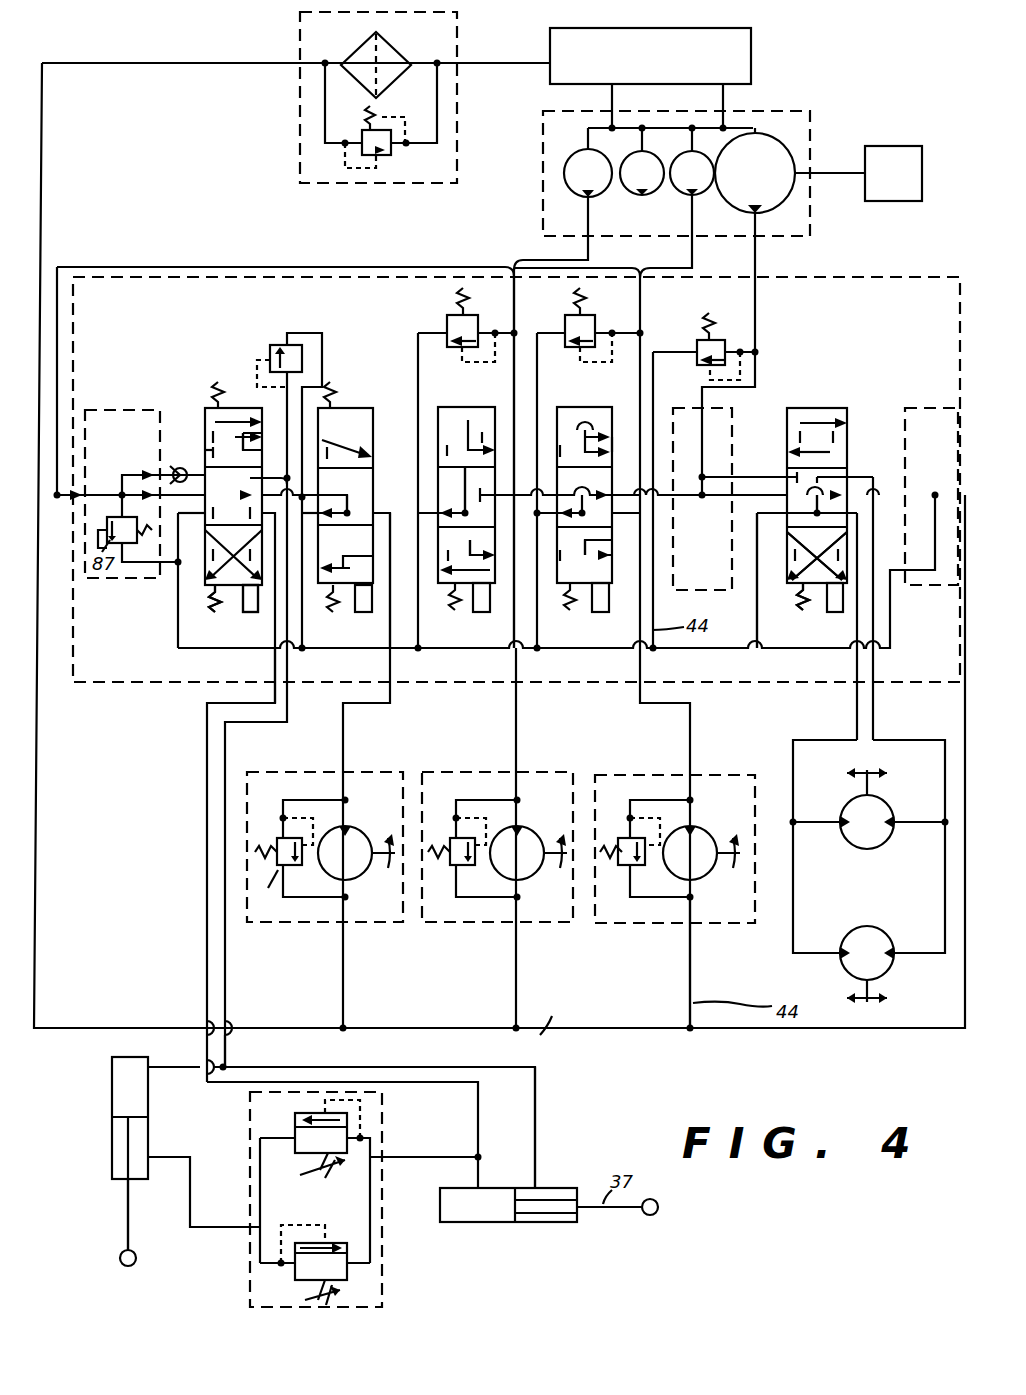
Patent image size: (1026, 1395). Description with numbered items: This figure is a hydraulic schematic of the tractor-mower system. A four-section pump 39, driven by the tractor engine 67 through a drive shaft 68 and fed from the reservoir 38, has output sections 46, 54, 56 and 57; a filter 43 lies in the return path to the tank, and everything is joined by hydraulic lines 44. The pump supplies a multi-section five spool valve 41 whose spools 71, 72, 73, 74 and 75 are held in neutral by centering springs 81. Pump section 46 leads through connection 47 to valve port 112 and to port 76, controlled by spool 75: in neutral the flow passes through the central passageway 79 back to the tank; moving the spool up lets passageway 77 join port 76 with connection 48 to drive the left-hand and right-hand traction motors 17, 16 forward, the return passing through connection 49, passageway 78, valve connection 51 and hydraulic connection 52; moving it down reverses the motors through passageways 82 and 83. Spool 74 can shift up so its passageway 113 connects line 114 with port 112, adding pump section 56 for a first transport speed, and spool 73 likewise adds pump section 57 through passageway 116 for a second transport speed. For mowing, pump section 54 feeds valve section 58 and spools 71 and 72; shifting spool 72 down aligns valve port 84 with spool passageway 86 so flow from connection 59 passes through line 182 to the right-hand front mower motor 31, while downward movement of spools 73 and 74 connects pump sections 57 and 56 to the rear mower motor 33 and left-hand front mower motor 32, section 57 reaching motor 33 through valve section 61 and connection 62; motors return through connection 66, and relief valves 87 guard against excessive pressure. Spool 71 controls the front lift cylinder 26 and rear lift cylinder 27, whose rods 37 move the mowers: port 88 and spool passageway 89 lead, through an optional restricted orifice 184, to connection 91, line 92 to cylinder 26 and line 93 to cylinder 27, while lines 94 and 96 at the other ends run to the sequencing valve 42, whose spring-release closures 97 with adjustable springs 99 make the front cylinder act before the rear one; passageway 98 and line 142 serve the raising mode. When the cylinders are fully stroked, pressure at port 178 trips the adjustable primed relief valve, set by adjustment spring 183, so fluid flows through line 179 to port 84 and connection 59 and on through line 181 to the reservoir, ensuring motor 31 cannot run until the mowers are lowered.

The filter 43 is at (452, 22).
The hydraulic reservoir 38 is at (751, 56).
The four-section pump 39 is at (812, 118).
The pump section 57 is at (582, 152).
The pump section 56 is at (639, 153).
The pump section 54 is at (689, 153).
The pump output section 46 is at (734, 150).
The engine 67 is at (895, 145).
The drive shaft 68 is at (832, 175).
The five spool valve 41 is at (862, 276).
The hydraulic lines 44 is at (693, 256).
The valve section 58 is at (58, 498).
The safety valves 87 is at (447, 319).
The adjustment spring 183 is at (323, 342).
The line 179 is at (323, 380).
The spool 71 is at (240, 405).
The spool 72 is at (364, 408).
The spool passageway 89 is at (252, 440).
The valve port 88 is at (191, 532).
The port 178 is at (252, 487).
The spool passageway 86 is at (352, 440).
The valve port 84 is at (316, 495).
The valve section 59 is at (350, 512).
The spool passageway 98 is at (238, 565).
The line 142 is at (280, 628).
The line 181 is at (318, 630).
The restricted orifice 184 is at (280, 704).
The line 182 is at (380, 703).
The valve section 61 is at (515, 334).
The spool 73 is at (460, 407).
The spool 74 is at (578, 407).
The connection 62 is at (463, 510).
The spool passageway 116 is at (476, 542).
The line 114 is at (636, 437).
The spool passageway 113 is at (583, 545).
The valve section 47 is at (756, 346).
The valve port 112 is at (688, 500).
The hydraulic port 76 is at (760, 477).
The spool 75 is at (786, 405).
The centering springs 81 is at (806, 404).
The spool passageway 83 is at (835, 418).
The spool passageway 82 is at (843, 452).
The central passageway 79 is at (803, 497).
The valve connection 51 is at (816, 540).
The spool valve passageway 77 is at (790, 552).
The spool fluid passageway 78 is at (806, 585).
The hydraulic connection 52 is at (757, 650).
The right-hand front mower motor 31 is at (396, 918).
The rear mower hydraulic motor 33 is at (570, 918).
The left-hand front mower motor 32 is at (724, 918).
The return connection 66 is at (688, 1026).
The hydraulic connection 48 is at (795, 820).
The hydraulic connection 49 is at (944, 826).
The right-hand traction motor 16 is at (888, 800).
The left-hand traction motor 17 is at (890, 935).
The connection 91 is at (232, 1066).
The line 93 is at (180, 1068).
The rear lift cylinder 27 is at (112, 1135).
The line 96 is at (171, 1157).
The cylinder rods 37 is at (130, 1220).
The hydraulic sequencing valve 42 is at (250, 1296).
The spring release member 97 is at (318, 1155).
The adjustable yielding springs 99 is at (340, 1290).
The line 94 is at (475, 1172).
The line 92 is at (537, 1152).
The front lift cylinder 26 is at (566, 1194).